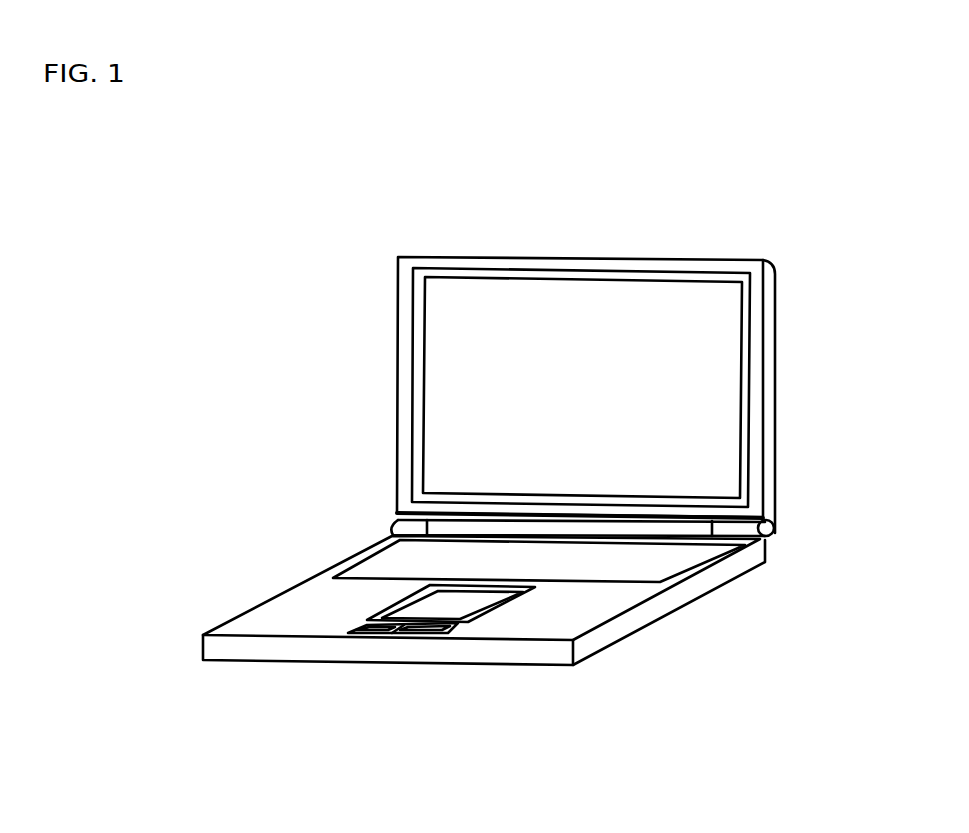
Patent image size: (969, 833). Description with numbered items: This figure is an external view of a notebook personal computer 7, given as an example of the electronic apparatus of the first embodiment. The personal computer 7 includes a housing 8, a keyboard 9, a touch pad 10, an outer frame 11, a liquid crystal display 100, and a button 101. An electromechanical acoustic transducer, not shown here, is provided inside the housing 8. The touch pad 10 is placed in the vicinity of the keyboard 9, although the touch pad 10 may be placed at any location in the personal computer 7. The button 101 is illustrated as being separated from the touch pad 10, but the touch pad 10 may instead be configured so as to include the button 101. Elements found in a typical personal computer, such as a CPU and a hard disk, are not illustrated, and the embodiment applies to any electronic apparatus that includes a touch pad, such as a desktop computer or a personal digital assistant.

The personal computer 7 is at (383, 257).
The liquid crystal display 100 is at (733, 337).
The housing 8 is at (310, 610).
The keyboard 9 is at (663, 563).
The touch pad 10 is at (442, 605).
The outer frame 11 is at (463, 618).
The button 101 is at (385, 632).